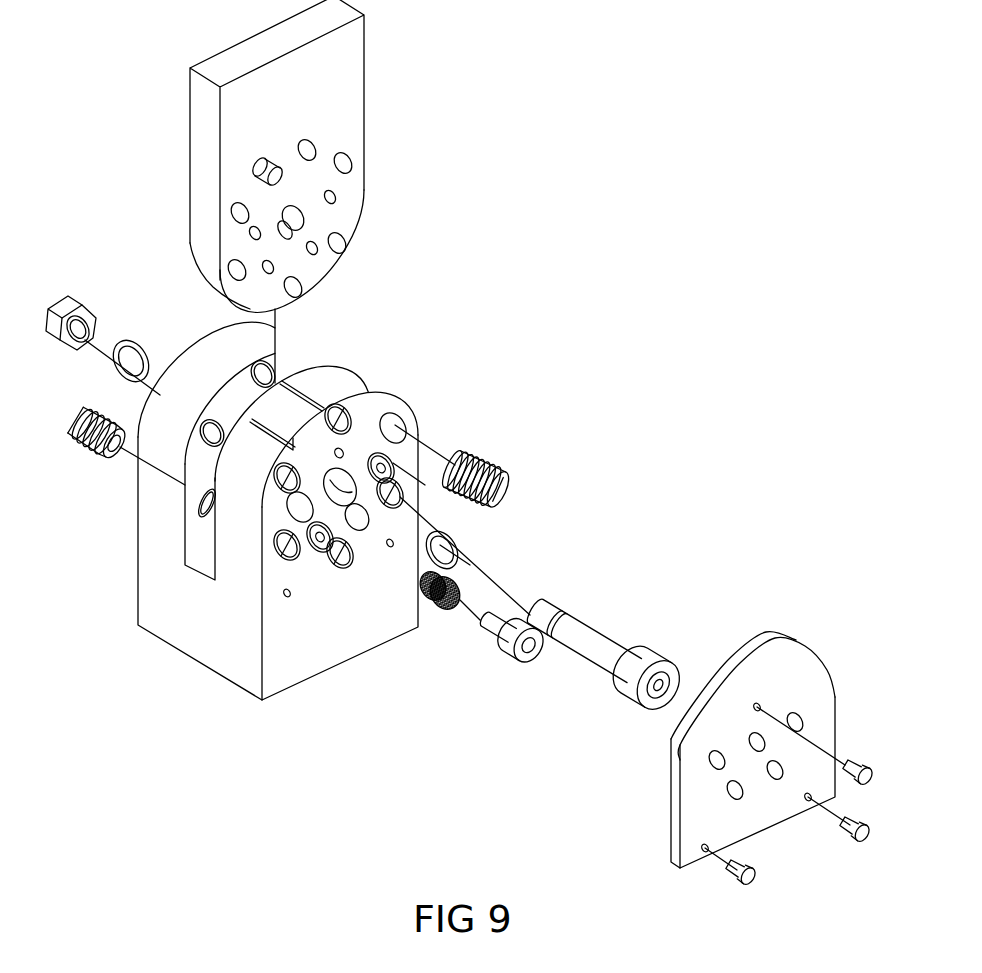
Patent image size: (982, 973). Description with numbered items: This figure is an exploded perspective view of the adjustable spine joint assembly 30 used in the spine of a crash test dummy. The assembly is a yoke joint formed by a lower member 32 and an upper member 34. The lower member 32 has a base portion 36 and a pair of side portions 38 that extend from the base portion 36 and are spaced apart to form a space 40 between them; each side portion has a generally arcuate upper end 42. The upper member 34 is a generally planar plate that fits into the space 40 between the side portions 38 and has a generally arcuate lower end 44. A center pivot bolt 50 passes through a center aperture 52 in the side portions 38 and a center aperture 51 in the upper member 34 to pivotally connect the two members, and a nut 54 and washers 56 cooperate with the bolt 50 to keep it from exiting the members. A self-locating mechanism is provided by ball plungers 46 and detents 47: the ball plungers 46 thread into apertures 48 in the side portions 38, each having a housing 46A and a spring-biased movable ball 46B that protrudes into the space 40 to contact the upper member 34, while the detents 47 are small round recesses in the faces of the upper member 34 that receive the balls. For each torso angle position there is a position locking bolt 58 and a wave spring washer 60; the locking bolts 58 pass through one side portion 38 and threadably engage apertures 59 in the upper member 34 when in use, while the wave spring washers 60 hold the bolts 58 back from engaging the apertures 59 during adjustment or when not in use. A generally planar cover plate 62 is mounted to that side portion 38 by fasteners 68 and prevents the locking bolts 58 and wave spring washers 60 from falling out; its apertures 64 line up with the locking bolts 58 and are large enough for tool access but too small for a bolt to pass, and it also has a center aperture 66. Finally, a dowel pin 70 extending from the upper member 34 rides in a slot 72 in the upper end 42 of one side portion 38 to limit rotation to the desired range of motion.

The adjustable spine joint assembly 30 is at (455, 300).
The lower member 32 is at (300, 688).
The upper member 34 is at (290, 32).
The base portion 36 is at (180, 635).
The side portions 38 is at (150, 522).
The space 40 is at (200, 562).
The upper end 42 is at (214, 352).
The lower end 44 is at (200, 254).
The ball plungers 46 is at (345, 408).
The housing 46A is at (90, 417).
The movable ball 46B is at (114, 458).
The detents 47 is at (315, 152).
The apertures 48 is at (410, 425).
The center pivot bolt 50 is at (600, 645).
The center aperture 51 is at (205, 268).
The center aperture 52 is at (400, 420).
The nut 54 is at (88, 300).
The washers 56 is at (118, 370).
The locking bolts 58 is at (395, 470).
The apertures 59 is at (335, 199).
The wave spring washer 60 is at (442, 612).
The cover plate 62 is at (790, 648).
The apertures 64 is at (800, 720).
The center aperture 66 is at (750, 745).
The fasteners 68 is at (858, 765).
The dowel pin 70 is at (256, 166).
The slot 72 is at (282, 366).